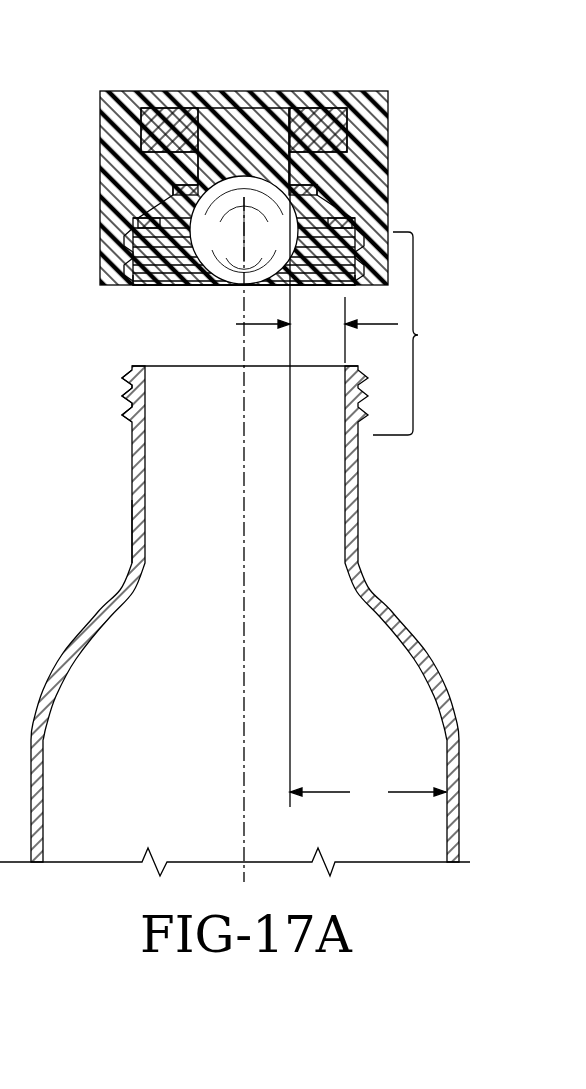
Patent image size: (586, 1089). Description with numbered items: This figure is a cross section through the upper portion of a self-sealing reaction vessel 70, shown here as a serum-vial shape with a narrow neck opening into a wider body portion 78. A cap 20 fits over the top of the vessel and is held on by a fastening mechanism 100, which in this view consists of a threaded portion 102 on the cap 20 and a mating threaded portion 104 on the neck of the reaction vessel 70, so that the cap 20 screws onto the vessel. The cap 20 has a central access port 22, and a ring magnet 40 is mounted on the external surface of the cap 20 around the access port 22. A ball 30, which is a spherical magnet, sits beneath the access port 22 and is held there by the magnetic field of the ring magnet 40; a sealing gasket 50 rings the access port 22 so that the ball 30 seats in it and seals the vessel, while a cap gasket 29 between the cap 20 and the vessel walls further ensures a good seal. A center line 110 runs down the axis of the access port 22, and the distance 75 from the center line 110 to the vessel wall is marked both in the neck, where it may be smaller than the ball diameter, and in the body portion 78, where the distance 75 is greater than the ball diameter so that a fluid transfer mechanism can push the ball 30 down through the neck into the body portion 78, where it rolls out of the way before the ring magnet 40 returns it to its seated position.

The cap 20 is at (137, 86).
The access port 22 is at (236, 130).
The cap gasket 29 is at (133, 218).
The ball 30 is at (227, 243).
The ring magnet 40 is at (330, 125).
The sealing gasket 50 is at (305, 192).
The reaction vessel 70 is at (358, 537).
The distance 75 is at (341, 457).
The body portion 78 is at (132, 540).
The fastening mechanism 100 is at (419, 333).
The threaded portion 102 is at (143, 285).
The mating threaded portion 104 is at (127, 423).
The center line 110 is at (244, 705).